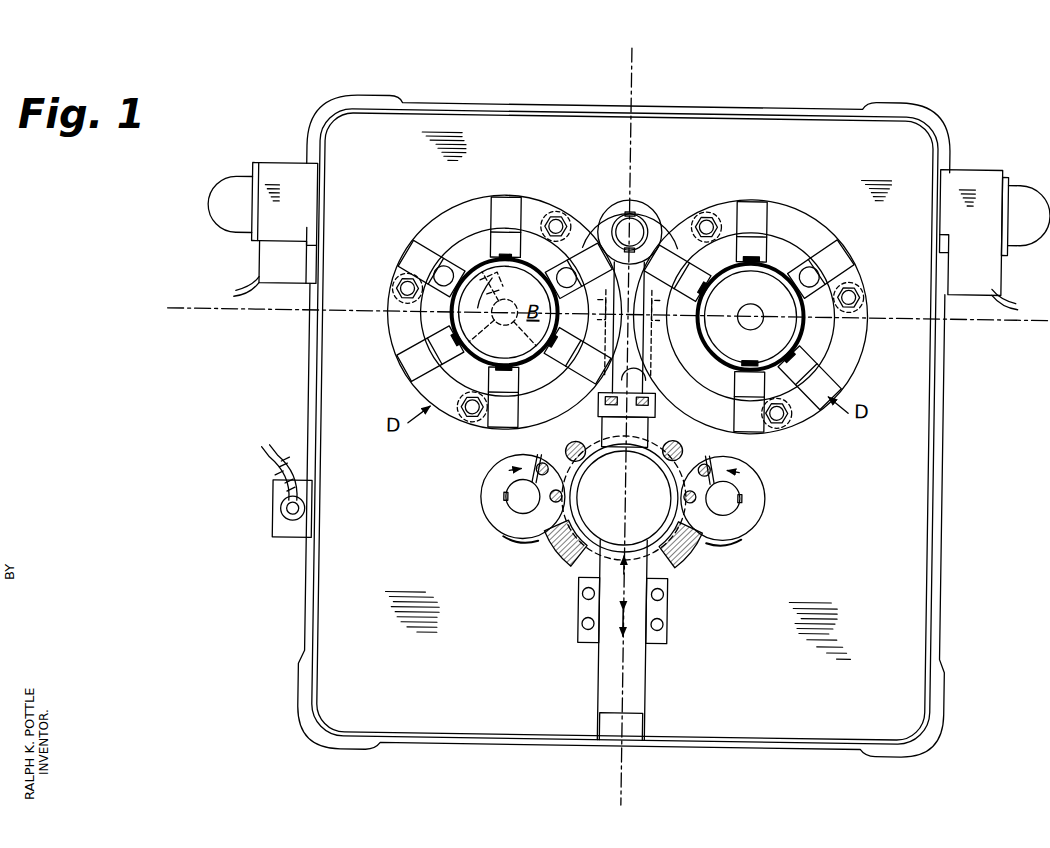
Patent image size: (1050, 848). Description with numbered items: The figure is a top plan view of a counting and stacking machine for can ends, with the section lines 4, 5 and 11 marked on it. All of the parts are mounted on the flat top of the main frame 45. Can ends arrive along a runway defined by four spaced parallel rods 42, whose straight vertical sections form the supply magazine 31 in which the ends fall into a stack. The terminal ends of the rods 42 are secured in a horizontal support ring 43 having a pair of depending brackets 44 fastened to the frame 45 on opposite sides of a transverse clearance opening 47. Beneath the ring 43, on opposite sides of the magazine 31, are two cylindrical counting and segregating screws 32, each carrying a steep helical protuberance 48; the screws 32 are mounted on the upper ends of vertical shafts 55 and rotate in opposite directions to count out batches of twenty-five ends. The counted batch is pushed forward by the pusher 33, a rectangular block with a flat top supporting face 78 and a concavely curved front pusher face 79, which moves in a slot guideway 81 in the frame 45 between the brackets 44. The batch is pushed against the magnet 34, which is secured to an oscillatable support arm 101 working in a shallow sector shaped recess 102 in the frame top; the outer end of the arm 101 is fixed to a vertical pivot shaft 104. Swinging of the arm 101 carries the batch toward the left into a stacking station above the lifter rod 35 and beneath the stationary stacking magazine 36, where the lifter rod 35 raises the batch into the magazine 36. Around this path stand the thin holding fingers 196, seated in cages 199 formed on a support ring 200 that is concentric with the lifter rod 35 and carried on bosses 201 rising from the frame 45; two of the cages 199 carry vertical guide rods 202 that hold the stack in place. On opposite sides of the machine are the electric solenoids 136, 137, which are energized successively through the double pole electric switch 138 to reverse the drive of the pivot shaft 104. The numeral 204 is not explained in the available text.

The section line 4- 4 is at (598, 67).
The section line 5- 5 is at (175, 278).
The section line 11- 11 is at (872, 255).
The magazine 31 is at (592, 556).
The counting and segregating screws 32 is at (502, 516).
The pusher 33 is at (632, 665).
The magnet 34 is at (648, 305).
The lifter rod 35 is at (485, 330).
The stacking magazine 36 is at (425, 352).
The rods 42 is at (566, 452).
The support ring 43 is at (666, 558).
The brackets 44 is at (582, 630).
The frame 45 is at (906, 550).
The clearance opening 47 is at (584, 596).
The helical protuberance 48 is at (540, 545).
The shafts 55 is at (515, 494).
The top supporting face 78 is at (634, 692).
The front pusher face 79 is at (619, 596).
The slot guideway 81 is at (598, 681).
The support arm 101 is at (605, 342).
The sector shaped recess 102 is at (740, 372).
The pivot shaft 104 is at (636, 228).
The electric solenoid 136 is at (281, 186).
The electric solenoid 137 is at (982, 176).
The double pole electric switch 138 is at (292, 550).
The holding fingers 196 is at (488, 272).
The cages 199 is at (420, 350).
The support ring 200 is at (440, 378).
The bosses 201 is at (556, 213).
The guide rods 202 is at (440, 268).
The lens 204 is at (806, 265).